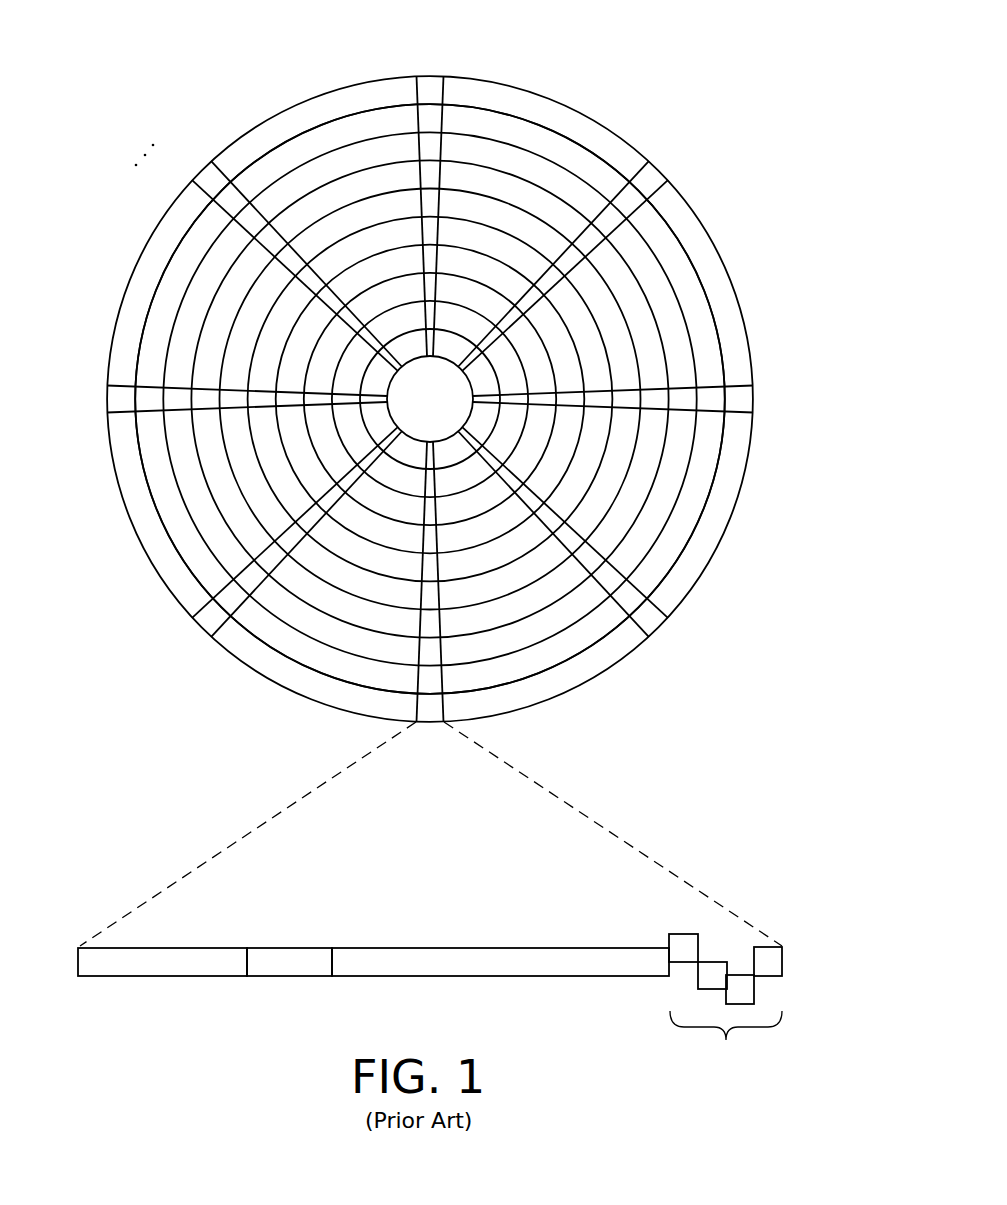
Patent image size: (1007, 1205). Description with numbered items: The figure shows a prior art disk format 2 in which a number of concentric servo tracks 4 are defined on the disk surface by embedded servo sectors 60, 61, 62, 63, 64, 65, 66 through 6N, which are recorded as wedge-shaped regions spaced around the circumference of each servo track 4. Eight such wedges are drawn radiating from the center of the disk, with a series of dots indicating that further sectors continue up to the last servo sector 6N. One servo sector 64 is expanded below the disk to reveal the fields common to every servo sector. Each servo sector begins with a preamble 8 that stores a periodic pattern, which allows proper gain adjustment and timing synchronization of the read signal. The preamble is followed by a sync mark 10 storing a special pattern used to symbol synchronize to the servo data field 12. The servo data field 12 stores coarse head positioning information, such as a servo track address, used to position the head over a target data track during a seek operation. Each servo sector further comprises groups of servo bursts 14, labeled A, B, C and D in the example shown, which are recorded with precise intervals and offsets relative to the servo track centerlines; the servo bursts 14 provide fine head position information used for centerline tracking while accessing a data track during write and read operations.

The disk format 2 is at (190, 78).
The servo track 4 is at (540, 140).
The servo sector 60 is at (431, 76).
The servo sector 61 is at (651, 175).
The servo sector 62 is at (745, 400).
The servo sector 63 is at (650, 622).
The servo sector 64 is at (287, 797).
The servo sector 65 is at (205, 623).
The servo sector 66 is at (113, 398).
The servo sector 6N is at (207, 176).
The preamble 8 is at (143, 976).
The sync mark 10 is at (287, 976).
The servo data field 12 is at (488, 976).
The servo bursts 14 is at (657, 915).